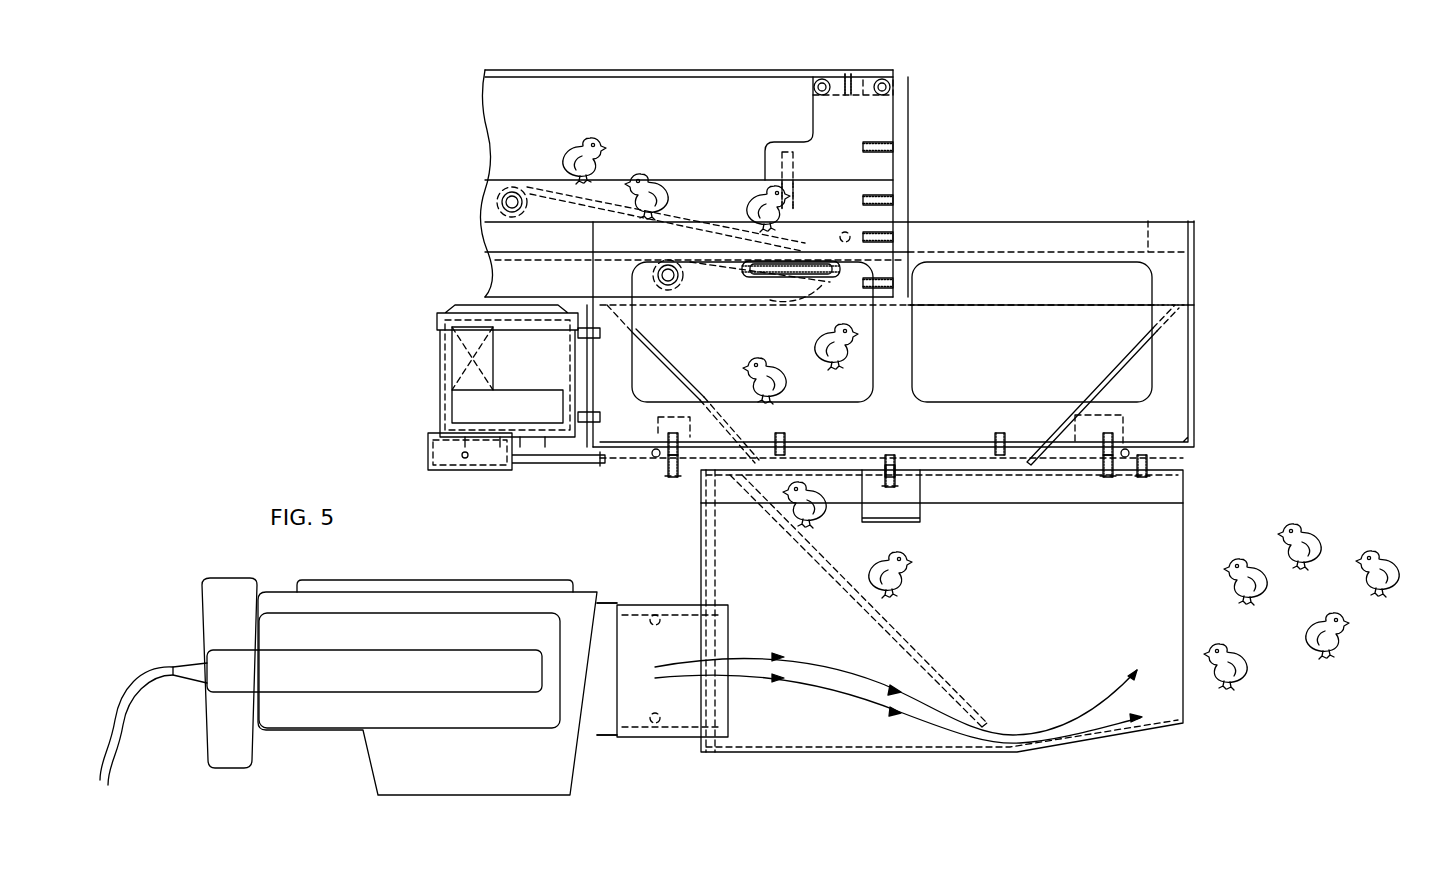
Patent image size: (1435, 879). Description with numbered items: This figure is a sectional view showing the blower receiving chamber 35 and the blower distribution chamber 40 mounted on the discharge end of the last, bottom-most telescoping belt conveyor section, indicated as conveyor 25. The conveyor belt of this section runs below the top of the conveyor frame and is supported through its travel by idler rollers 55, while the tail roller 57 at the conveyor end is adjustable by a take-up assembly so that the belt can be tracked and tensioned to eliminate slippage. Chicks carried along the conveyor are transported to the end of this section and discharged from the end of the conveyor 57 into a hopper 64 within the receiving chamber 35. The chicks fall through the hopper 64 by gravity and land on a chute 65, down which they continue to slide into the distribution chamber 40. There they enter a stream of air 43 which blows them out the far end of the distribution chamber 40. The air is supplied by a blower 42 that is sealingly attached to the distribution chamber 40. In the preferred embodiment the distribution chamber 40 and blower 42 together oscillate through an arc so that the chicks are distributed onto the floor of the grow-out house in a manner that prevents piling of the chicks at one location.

The conveyor 25 is at (765, 70).
The blower receiving chamber 35 is at (1194, 283).
The blower distribution chamber 40 is at (1183, 522).
The blower 42 is at (478, 795).
The stream of air 43 is at (843, 693).
The idler rollers 55 is at (495, 202).
The tail roller 57 is at (790, 295).
The hopper 64 is at (660, 370).
The chute 65 is at (823, 572).